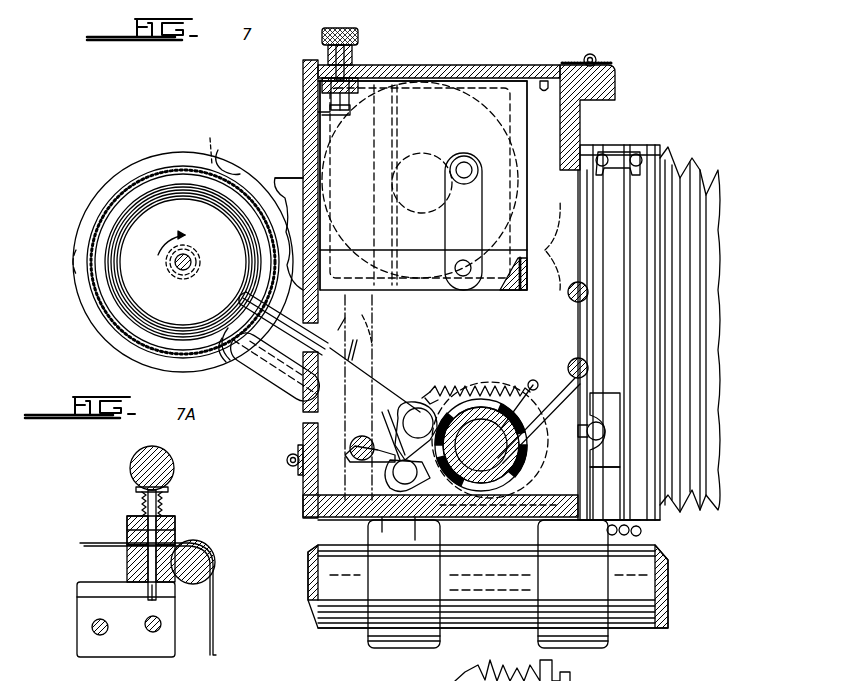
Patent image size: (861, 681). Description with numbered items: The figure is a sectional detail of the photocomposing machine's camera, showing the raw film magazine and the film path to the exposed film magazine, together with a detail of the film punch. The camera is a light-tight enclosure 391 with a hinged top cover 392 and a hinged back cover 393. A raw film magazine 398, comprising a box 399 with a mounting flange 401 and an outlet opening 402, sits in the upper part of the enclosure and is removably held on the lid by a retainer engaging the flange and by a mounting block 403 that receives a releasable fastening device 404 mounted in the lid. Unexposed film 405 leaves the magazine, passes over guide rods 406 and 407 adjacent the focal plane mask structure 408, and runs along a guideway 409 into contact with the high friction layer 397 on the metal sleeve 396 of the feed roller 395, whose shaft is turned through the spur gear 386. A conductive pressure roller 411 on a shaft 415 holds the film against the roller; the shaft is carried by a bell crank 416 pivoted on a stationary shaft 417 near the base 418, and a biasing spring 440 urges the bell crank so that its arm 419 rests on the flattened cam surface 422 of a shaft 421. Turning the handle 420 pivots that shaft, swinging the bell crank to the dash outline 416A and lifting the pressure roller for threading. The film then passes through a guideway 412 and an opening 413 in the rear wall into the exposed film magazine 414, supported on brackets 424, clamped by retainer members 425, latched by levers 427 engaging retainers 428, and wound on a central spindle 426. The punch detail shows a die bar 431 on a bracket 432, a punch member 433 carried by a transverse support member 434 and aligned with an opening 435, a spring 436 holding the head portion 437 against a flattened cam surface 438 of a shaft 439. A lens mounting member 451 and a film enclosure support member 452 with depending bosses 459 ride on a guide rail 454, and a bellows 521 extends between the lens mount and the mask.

In FIG. 7, the spur gear 386 is at (497, 372).
In FIG. 7, the light-tight enclosure 391 is at (582, 128).
In FIG. 7, the hinged top cover 392 is at (485, 70).
In FIG. 7, the hinged back cover 393 is at (303, 112).
In FIG. 7, the roller 395 is at (523, 397).
In FIG. 7, the metal sleeve 396 is at (520, 440).
In FIG. 7, the high friction layer 397 is at (498, 425).
In FIG. 7, the raw film magazine 398 is at (445, 90).
In FIG. 7, the box or container 399 is at (527, 160).
In FIG. 7, the mounting flange 401 is at (543, 92).
In FIG. 7, the outlet opening 402 is at (552, 70).
In FIG. 7, the mounting block 403 is at (310, 108).
In FIG. 7, the releasable fastening device 404 is at (352, 50).
In FIG. 7, the film 405 is at (533, 260).
In FIG. 7A, the film 405 is at (90, 543).
In FIG. 7, the guide rod 406 is at (570, 296).
In FIG. 7A, the guide rod 406 is at (208, 553).
In FIG. 7, the guide rod 407 is at (572, 360).
In FIG. 7, the focal plane mask structure 408 is at (635, 145).
In FIG. 7, the guideway 409 is at (590, 452).
In FIG. 7, the pressure roller 411 is at (412, 408).
In FIG. 7, the guideway 412 is at (283, 318).
In FIG. 7, the opening 413 is at (339, 394).
In FIG. 7, the exposed film magazine 414 is at (112, 165).
In FIG. 7, the shaft 415 is at (385, 427).
In FIG. 7, the bell crank 416 is at (392, 534).
In FIG. 7, the dash outline 416A is at (390, 440).
In FIG. 7, the stationary shaft 417 is at (414, 540).
In FIG. 7, the base 418 is at (335, 517).
In FIG. 7, the arm 419 is at (393, 478).
In FIG. 7, the handle 420 is at (384, 393).
In FIG. 7, the shaft 421 is at (370, 446).
In FIG. 7, the cam surface 422 is at (395, 455).
In FIG. 7, the bracket 424 is at (280, 178).
In FIG. 7, the retainer member 425 is at (183, 238).
In FIG. 7, the central spindle 426 is at (182, 280).
In FIG. 7, the latching lever 427 is at (266, 385).
In FIG. 7, the retainer 428 is at (234, 365).
In FIG. 7A, the bar 431 is at (127, 562).
In FIG. 7A, the bracket 432 is at (104, 619).
In FIG. 7A, the punch member 433 is at (165, 522).
In FIG. 7A, the transverse support member 434 is at (170, 532).
In FIG. 7A, the opening 435 is at (150, 585).
In FIG. 7A, the spring 436 is at (140, 505).
In FIG. 7A, the head portion 437 is at (136, 489).
In FIG. 7A, the flattened cam surface 438 is at (168, 489).
In FIG. 7A, the shaft 439 is at (174, 467).
In FIG. 7, the biasing spring 440 is at (452, 388).
In FIG. 7, the lens mounting member 451 is at (531, 670).
In FIG. 7, the film enclosure support member 452 is at (485, 524).
In FIG. 7, the guide rail 454 is at (343, 612).
In FIG. 7, the depending boss 459 is at (400, 648).
In FIG. 7, the bellows 521 is at (694, 165).